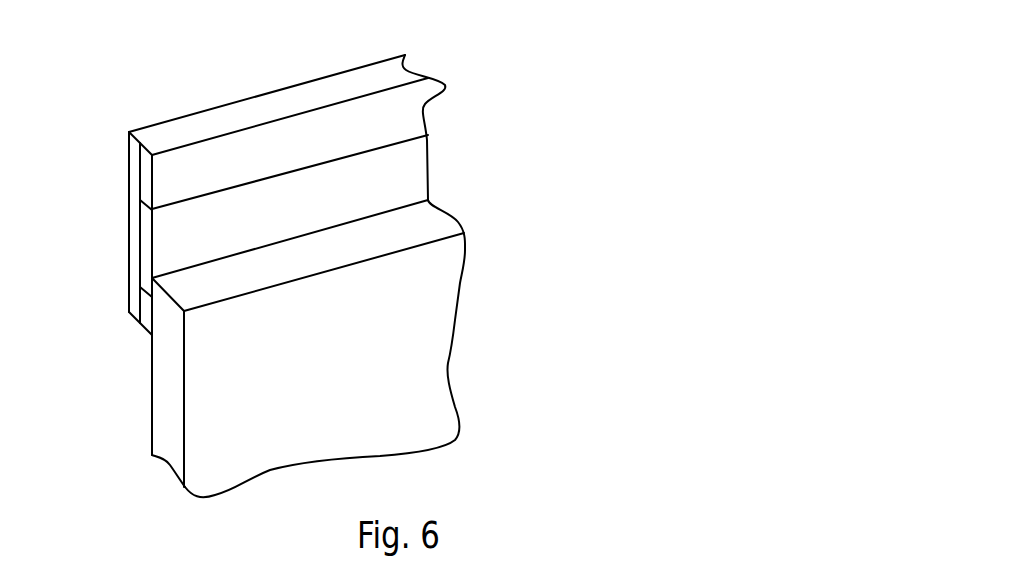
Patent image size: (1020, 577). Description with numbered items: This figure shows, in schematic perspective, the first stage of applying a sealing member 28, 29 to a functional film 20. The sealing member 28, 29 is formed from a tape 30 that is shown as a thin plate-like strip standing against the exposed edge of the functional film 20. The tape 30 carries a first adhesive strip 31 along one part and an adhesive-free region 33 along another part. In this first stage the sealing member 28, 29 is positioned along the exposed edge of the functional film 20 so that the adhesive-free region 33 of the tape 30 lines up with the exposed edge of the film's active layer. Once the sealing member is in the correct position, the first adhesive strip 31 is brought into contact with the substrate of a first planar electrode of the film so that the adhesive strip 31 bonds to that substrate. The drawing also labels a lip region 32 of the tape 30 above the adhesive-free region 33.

The functional film 20 is at (432, 359).
The sealing member 28 is at (503, 65).
The sealing member 29 is at (287, 127).
The tape 30 is at (135, 240).
The first adhesive strip 31 is at (147, 320).
The lip 32 is at (407, 108).
The adhesive-free region 33 is at (400, 183).